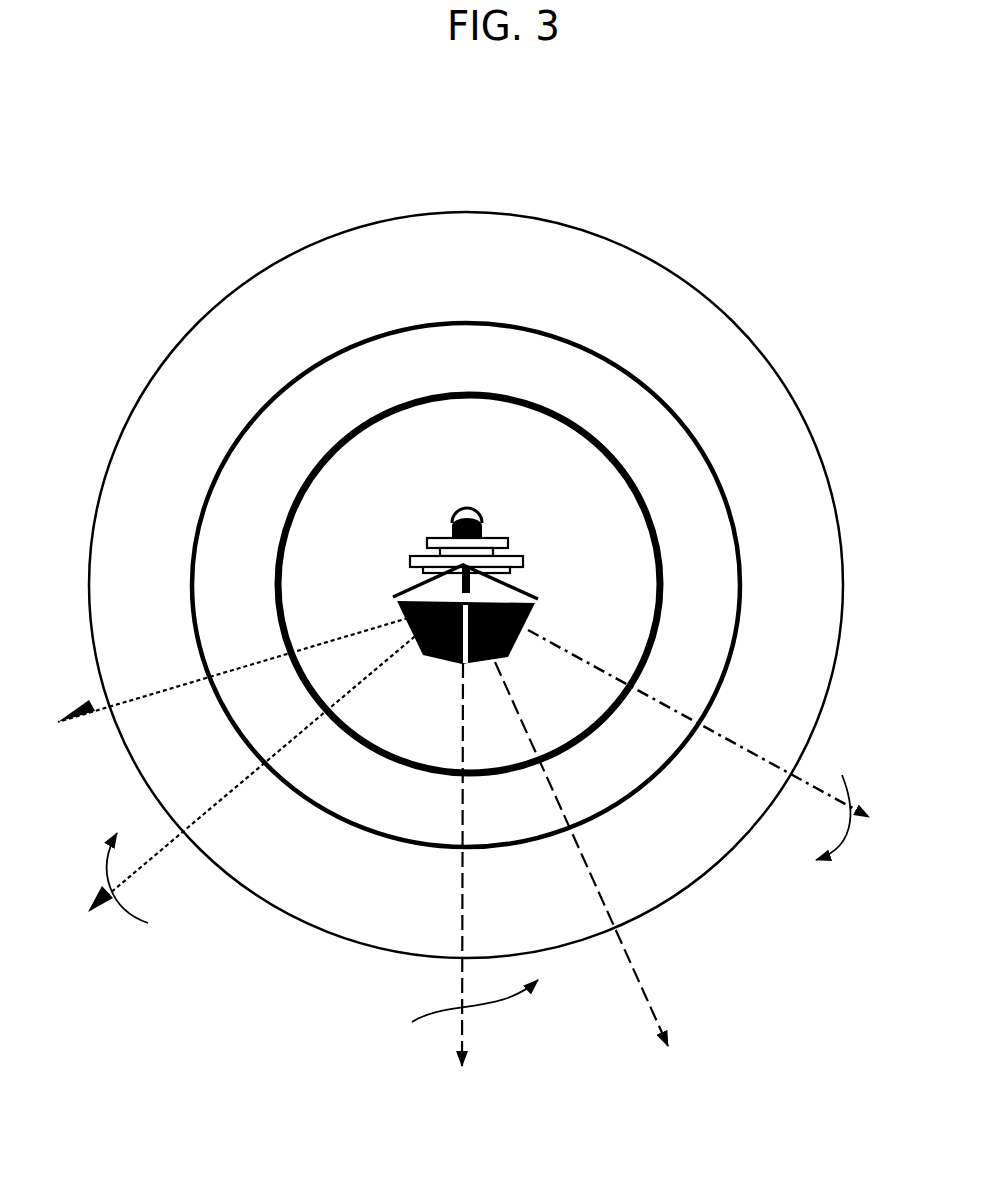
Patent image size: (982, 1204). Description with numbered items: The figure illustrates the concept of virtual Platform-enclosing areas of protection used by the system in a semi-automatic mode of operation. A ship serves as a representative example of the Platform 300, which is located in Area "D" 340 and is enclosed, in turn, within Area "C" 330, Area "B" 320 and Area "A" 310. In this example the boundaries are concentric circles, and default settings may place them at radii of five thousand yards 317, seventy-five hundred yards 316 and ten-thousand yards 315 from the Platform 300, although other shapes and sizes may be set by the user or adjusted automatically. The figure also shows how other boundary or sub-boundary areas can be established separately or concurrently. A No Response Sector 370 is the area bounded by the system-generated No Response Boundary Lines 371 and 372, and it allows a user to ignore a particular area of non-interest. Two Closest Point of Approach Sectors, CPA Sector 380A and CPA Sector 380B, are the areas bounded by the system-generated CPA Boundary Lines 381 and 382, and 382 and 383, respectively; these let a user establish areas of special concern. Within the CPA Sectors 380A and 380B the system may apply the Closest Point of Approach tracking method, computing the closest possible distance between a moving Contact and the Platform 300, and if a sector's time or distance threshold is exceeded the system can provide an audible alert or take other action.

The Platform 300 is at (528, 580).
The Area "A" 310 is at (665, 89).
The ten-thousand yard boundary 315 is at (553, 222).
The seventy-five hundred yard boundary 316 is at (693, 432).
The five thousand yard boundary 317 is at (300, 490).
The Area "B" 320 is at (405, 254).
The Area "C" 330 is at (398, 364).
The Area "D" 340 is at (541, 460).
The No Response Sector 370 is at (137, 892).
The No Response Boundary Line 371 is at (183, 682).
The No Response Boundary Line 372 is at (232, 792).
The CPA Sector 380A is at (448, 1008).
The CPA Sector 380B is at (838, 805).
The CPA Boundary Line 381 is at (462, 935).
The CPA Boundary Line 382 is at (605, 905).
The CPA Boundary Line 383 is at (752, 752).